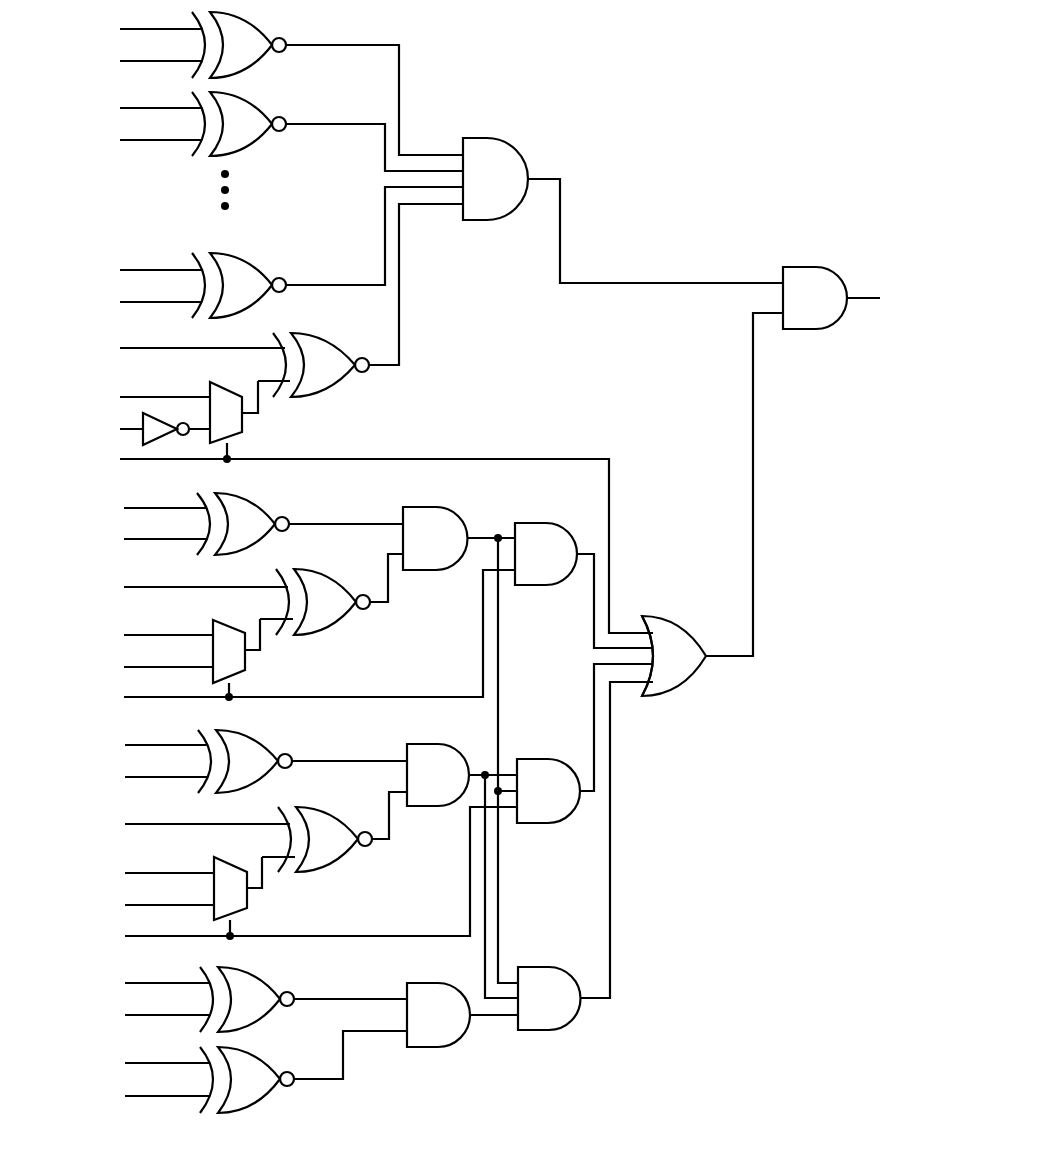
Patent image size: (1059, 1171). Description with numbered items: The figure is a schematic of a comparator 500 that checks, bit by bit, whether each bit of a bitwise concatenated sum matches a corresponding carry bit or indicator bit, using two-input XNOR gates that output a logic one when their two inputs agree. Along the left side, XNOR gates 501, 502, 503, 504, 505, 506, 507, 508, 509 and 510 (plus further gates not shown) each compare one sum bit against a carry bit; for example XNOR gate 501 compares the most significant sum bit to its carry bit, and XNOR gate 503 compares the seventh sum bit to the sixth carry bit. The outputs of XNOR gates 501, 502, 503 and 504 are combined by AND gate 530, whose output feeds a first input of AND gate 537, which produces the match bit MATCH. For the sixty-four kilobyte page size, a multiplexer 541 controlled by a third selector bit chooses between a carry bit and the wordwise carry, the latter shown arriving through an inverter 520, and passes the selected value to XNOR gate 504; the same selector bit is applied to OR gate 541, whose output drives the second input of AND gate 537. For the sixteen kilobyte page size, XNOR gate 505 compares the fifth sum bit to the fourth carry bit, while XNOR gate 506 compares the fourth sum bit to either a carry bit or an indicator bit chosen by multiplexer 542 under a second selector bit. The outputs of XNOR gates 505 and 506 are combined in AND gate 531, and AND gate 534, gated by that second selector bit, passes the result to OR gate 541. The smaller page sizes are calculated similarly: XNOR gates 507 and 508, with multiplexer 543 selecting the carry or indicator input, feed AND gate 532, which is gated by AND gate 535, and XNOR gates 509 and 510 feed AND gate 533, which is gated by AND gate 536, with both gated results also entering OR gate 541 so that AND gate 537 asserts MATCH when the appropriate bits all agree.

The comparator 500 is at (746, 61).
The XNOR gate 501 is at (262, 56).
The XNOR gate 502 is at (262, 135).
The XNOR gate 503 is at (262, 296).
The XNOR gate 504 is at (344, 376).
The XNOR gate 505 is at (266, 535).
The XNOR gate 506 is at (346, 613).
The XNOR gate 507 is at (267, 772).
The XNOR gate 508 is at (348, 850).
The XNOR gate 509 is at (269, 1010).
The XNOR gate 510 is at (269, 1090).
The inverter 520 is at (172, 434).
The AND gate 530 is at (512, 191).
The AND gate 531 is at (452, 550).
The AND gate 532 is at (455, 787).
The AND gate 533 is at (455, 1027).
The AND gate 534 is at (563, 566).
The AND gate 535 is at (565, 803).
The AND gate 536 is at (566, 1010).
The AND gate 537 is at (832, 310).
The multiplexer / OR gate 541 is at (241, 433).
The multiplexer 542 is at (244, 671).
The multiplexer 543 is at (246, 909).